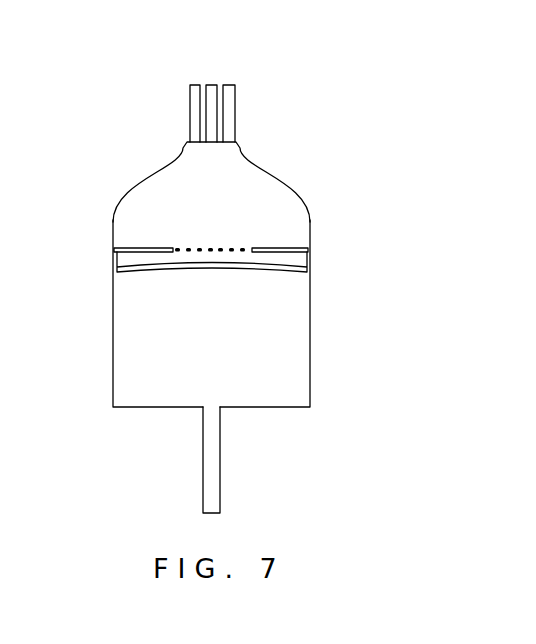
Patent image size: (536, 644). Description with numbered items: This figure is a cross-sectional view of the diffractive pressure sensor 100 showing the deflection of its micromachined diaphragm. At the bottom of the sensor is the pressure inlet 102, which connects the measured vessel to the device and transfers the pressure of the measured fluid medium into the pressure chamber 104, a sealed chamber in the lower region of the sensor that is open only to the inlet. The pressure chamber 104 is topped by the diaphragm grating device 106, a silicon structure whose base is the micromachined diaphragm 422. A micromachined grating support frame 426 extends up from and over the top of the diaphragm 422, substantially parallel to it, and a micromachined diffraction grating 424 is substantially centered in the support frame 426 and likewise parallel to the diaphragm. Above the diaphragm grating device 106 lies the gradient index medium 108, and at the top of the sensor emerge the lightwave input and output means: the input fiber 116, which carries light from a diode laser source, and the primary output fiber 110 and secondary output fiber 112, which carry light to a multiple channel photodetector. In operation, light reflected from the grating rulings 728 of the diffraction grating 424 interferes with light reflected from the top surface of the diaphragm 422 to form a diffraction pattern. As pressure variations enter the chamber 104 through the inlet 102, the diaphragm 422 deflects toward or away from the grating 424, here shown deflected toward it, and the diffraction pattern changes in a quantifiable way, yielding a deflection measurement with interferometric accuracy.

The diffractive pressure sensor 100 is at (232, 278).
The pressure inlet 102 is at (210, 470).
The pressure chamber 104 is at (290, 337).
The diaphragm grating device 106 is at (232, 234).
The gradient index medium 108 is at (278, 217).
The primary output fiber 110 is at (212, 85).
The secondary output fiber 112 is at (229, 100).
The input fiber 116 is at (195, 100).
The micromachined diaphragm 422 is at (187, 268).
The micromachined diffraction grating 424 is at (245, 235).
The micromachined grating support frame 426 is at (127, 248).
The grating rulings 728 is at (187, 247).